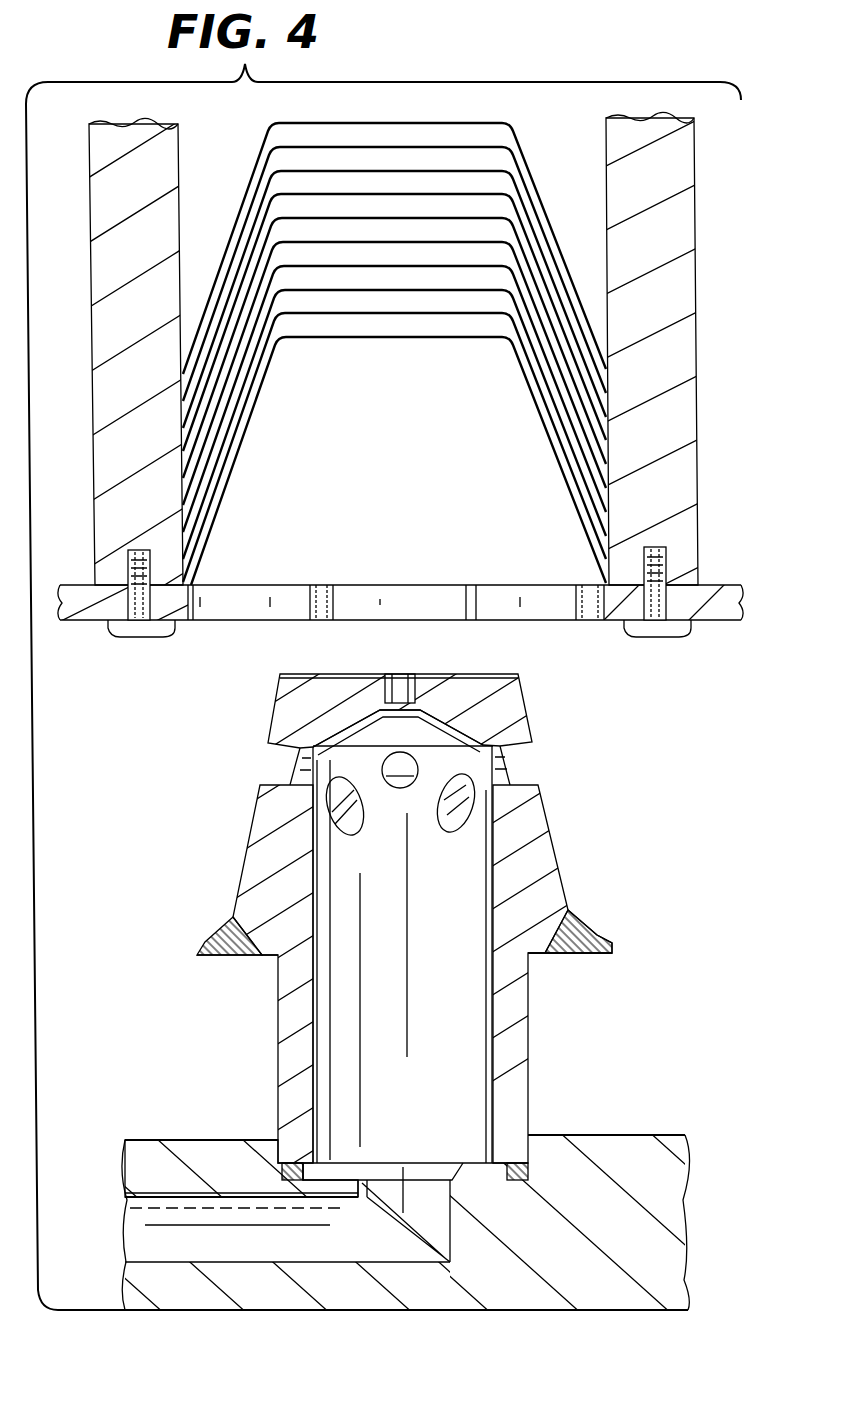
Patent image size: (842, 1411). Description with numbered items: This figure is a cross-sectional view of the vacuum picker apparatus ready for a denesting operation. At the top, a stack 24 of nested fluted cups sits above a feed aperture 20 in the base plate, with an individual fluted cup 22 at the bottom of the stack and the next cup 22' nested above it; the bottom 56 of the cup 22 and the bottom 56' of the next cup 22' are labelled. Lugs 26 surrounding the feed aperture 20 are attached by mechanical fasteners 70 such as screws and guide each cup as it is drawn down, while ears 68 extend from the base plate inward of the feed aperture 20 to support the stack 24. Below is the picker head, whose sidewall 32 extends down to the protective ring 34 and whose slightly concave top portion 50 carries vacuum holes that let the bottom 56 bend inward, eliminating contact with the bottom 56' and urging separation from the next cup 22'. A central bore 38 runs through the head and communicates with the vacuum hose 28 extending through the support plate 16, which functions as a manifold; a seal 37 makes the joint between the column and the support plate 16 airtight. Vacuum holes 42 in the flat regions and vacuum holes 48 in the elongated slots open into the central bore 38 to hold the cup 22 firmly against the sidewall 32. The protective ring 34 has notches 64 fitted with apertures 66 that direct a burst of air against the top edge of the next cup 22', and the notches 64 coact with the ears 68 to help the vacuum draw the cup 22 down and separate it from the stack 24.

The support plate 16 is at (421, 1205).
The feed aperture 20 is at (399, 605).
The fluted cup 22 is at (471, 387).
The next cup 22' is at (469, 421).
The stack of nested fluted cups 24 is at (471, 336).
The lug 26 is at (130, 352).
The vacuum hose 28 is at (140, 1234).
The sidewall 32 is at (560, 822).
The protective ring 34 is at (612, 942).
The seal 37 is at (527, 1166).
The central bore 38 is at (470, 1065).
The vacuum hole 42 is at (292, 770).
The vacuum hole 48 is at (402, 768).
The top portion 50 is at (478, 668).
The bottom of the cup 56 is at (394, 336).
The bottom of the next cup 56' is at (394, 447).
The notch 64 is at (197, 957).
The aperture 66 is at (214, 932).
The ear 68 is at (286, 598).
The mechanical fastener 70 is at (145, 640).